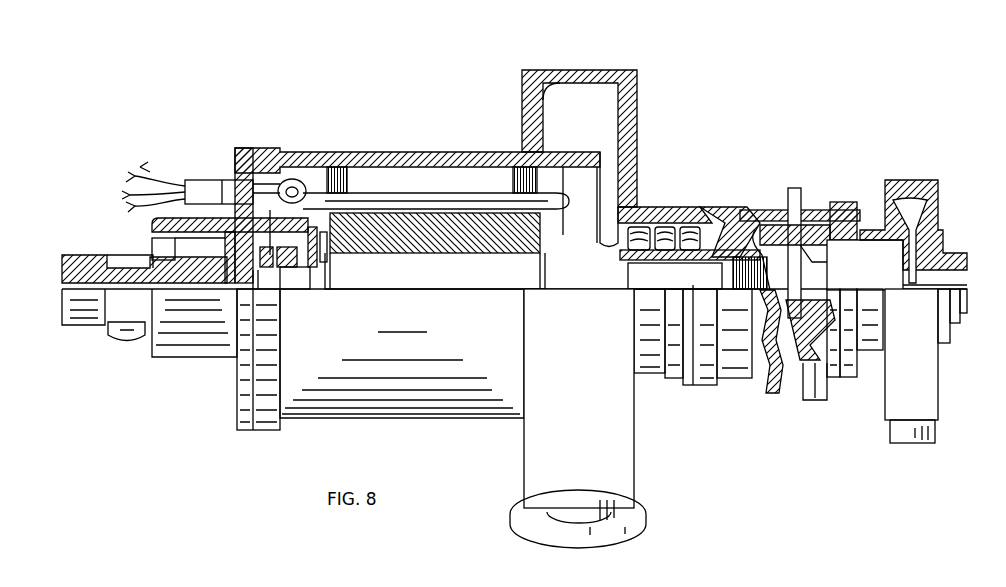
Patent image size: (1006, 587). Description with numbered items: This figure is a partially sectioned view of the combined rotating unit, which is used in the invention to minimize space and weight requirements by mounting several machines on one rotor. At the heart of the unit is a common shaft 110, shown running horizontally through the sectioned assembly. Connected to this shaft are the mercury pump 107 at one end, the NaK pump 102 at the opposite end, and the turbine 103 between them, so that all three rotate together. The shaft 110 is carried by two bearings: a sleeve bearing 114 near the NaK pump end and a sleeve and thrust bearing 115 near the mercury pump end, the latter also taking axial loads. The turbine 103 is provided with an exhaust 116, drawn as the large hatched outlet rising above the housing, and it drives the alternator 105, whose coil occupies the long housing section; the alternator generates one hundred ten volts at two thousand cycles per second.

The NaK pump 102 is at (903, 210).
The turbine 103 is at (645, 232).
The alternator 105 is at (427, 178).
The mercury pump 107 is at (98, 257).
The common shaft 110 is at (647, 277).
The sleeve bearing 114 is at (825, 290).
The sleeve and thrust bearing 115 is at (277, 280).
The exhaust 116 is at (563, 110).